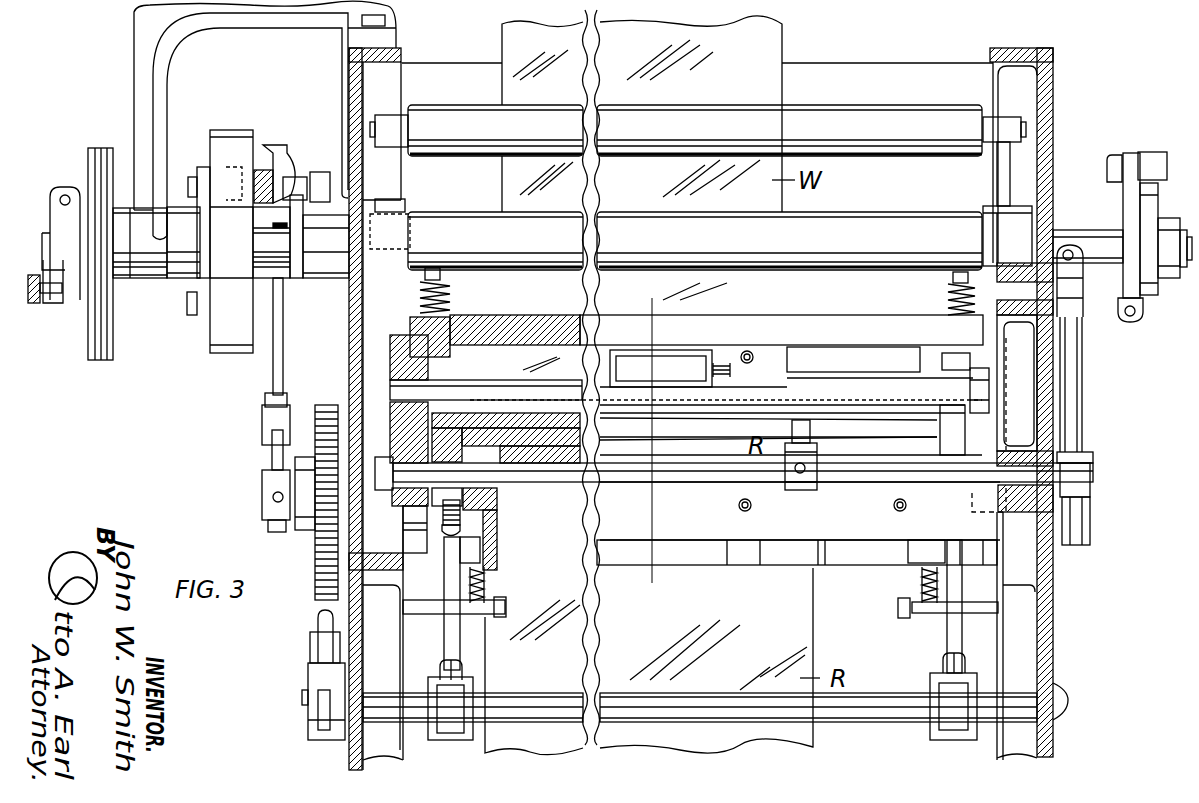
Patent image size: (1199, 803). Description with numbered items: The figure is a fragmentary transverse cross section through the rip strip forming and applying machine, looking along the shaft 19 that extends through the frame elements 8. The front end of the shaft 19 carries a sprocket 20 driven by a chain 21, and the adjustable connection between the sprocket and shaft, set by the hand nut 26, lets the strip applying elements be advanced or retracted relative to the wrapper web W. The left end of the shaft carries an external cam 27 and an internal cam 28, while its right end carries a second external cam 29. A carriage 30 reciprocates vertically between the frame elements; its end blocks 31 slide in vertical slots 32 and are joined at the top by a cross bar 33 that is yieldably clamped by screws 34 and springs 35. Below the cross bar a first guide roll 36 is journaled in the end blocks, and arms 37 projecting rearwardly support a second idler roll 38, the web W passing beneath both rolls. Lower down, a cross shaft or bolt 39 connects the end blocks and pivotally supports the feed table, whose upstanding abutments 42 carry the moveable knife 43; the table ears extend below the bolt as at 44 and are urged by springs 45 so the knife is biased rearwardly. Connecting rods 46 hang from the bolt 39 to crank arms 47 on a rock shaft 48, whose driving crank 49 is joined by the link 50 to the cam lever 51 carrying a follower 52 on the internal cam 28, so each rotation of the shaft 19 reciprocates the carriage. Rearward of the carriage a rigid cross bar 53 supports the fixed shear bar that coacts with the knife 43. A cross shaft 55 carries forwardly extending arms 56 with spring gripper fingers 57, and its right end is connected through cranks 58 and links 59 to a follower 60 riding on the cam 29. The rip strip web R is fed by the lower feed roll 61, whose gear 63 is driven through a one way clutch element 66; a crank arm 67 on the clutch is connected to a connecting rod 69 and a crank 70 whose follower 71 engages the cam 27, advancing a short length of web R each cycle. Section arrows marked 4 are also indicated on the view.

The section line 4- 4 is at (648, 298).
The frame elements 8 is at (347, 752).
The shaft 19 is at (822, 218).
The sprocket 20 is at (80, 182).
The chain 21 is at (93, 360).
The hand nut 26 is at (37, 305).
The first external cam 27 is at (300, 280).
The internal cam 28 is at (207, 355).
The second external cam 29 is at (1148, 208).
The carriage 30 is at (390, 345).
The end blocks 31 is at (390, 362).
The vertical slots 32 is at (362, 385).
The cross bar 33 is at (818, 325).
The screws 34 is at (433, 282).
The springs 35 is at (448, 291).
The first guide roll 36 is at (452, 392).
The arms 37 is at (982, 387).
The second idler roll 38 is at (830, 385).
The cross shaft or bolt 39 is at (415, 473).
The upstanding abutments 42 is at (392, 420).
The moveable knife or shear bar 43 is at (682, 413).
The ear extensions 44 is at (505, 565).
The springs 45 is at (495, 585).
The connecting rods 46 is at (455, 630).
The crank arms 47 is at (455, 737).
The rock shaft 48 is at (530, 700).
The driving crank 49 is at (320, 712).
The link 50 is at (318, 626).
The cam lever 51 is at (298, 160).
The follower 52 is at (237, 132).
The rigid cross bar 53 is at (900, 560).
The cross shaft 55 is at (862, 480).
The arms 56 is at (815, 458).
The spring gripper fingers 57 is at (812, 430).
The cranks 58 is at (1112, 183).
The links 59 is at (1082, 390).
The follower 60 is at (1143, 160).
The lower feed roll 61 is at (705, 565).
The gear 63 is at (308, 535).
The one way clutch element 66 is at (262, 472).
The crank arm 67 is at (265, 450).
The connecting rod 69 is at (272, 377).
The crank 70 is at (272, 150).
The follower 71 is at (300, 185).